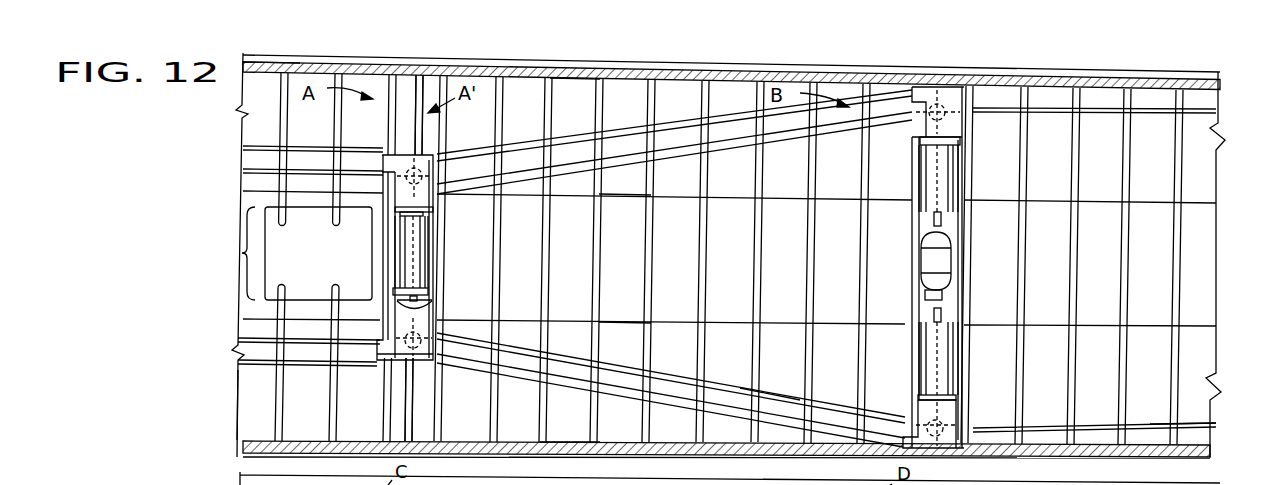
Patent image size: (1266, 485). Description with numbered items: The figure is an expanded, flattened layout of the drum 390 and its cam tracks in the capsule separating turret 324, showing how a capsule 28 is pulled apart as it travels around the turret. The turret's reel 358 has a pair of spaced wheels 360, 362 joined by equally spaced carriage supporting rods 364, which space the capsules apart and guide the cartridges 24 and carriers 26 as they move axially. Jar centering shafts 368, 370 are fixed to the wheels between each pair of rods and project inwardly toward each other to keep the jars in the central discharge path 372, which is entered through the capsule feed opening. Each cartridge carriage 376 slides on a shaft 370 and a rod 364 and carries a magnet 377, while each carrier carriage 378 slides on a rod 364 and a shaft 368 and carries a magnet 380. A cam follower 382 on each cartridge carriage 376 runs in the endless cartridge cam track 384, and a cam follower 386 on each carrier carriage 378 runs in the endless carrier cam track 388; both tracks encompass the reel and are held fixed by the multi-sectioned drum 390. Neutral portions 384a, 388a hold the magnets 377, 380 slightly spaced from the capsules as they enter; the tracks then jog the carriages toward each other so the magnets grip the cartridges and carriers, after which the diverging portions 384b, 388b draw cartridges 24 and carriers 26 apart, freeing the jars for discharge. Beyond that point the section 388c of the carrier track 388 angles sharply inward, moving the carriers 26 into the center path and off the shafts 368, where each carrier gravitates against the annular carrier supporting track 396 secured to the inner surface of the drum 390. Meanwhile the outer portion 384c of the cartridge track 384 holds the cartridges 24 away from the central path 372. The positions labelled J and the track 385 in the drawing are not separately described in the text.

The capsule separating turret 324 is at (612, 77).
The reel 358 is at (260, 77).
The neutral portion of carrier cam track 388a is at (267, 144).
The guide rail 385 is at (257, 159).
The central discharge path 372 is at (222, 248).
The neutral portion of cartridge cam track 384a is at (262, 358).
The multi-sectioned drum 390 is at (250, 418).
The cam follower 386 is at (381, 157).
The jar centering shaft 368 is at (420, 138).
The carrier carriage 378 is at (431, 205).
The magnet 380 is at (428, 217).
The carrier 26 is at (420, 248).
The capsule 28 is at (424, 269).
The cartridge 24 is at (426, 293).
The magnet 377 is at (430, 310).
The cam follower 382 is at (398, 361).
The cartridge carriage 376 is at (436, 357).
The jar centering shaft 370 is at (411, 418).
The wheel 360 is at (577, 80).
The diverging portion of carrier cam track 388b is at (686, 128).
The inwardly angled section of carrier cam track 388c is at (671, 407).
The carrier cam track 388 is at (1052, 100).
The cartridge cam track 384 is at (1046, 440).
The diverging portion of cartridge cam track 384b is at (767, 408).
The outer portion of cartridge cam track 384c is at (1195, 433).
The annular carrier supporting track 396 is at (648, 250).
The carriage supporting rod 364 is at (815, 260).
The wheel 362 is at (558, 441).
The capsule J is at (945, 262).